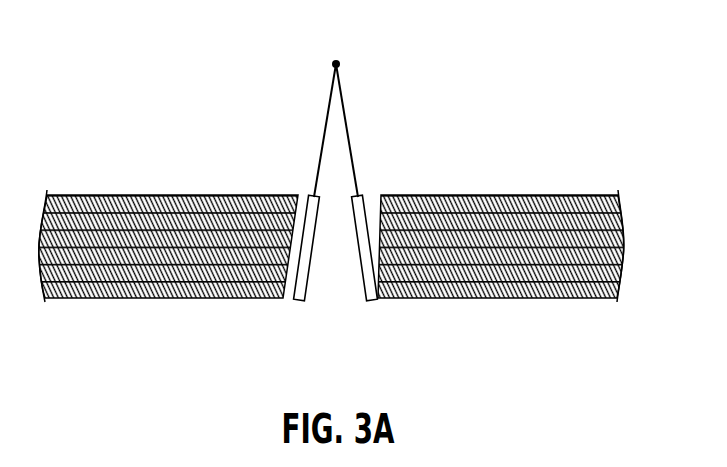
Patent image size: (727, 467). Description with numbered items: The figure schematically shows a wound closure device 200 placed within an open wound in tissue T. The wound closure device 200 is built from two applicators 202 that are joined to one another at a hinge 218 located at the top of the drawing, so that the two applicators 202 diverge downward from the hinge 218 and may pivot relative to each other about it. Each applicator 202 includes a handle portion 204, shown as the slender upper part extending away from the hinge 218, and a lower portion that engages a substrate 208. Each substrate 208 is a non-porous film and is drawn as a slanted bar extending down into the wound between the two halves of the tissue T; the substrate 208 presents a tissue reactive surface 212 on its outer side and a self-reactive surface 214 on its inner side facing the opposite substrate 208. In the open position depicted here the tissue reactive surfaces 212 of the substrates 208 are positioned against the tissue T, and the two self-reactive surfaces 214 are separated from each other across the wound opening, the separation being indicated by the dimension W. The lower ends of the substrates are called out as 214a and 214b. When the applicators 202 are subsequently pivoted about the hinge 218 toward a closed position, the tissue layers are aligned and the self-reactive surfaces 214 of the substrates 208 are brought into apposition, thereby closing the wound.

The wound closure device 200 is at (288, 53).
The applicators 202 is at (317, 102).
The handle portion 204 is at (321, 148).
The substrate 208 is at (311, 193).
The tissue reactive surface 212 is at (375, 224).
The self-reactive surface 214 is at (312, 272).
The first jaw tip 214a is at (310, 300).
The second jaw tip 214b is at (363, 300).
The hinge 218 is at (337, 60).
The tissue T is at (170, 225).
The width of opening W is at (335, 214).